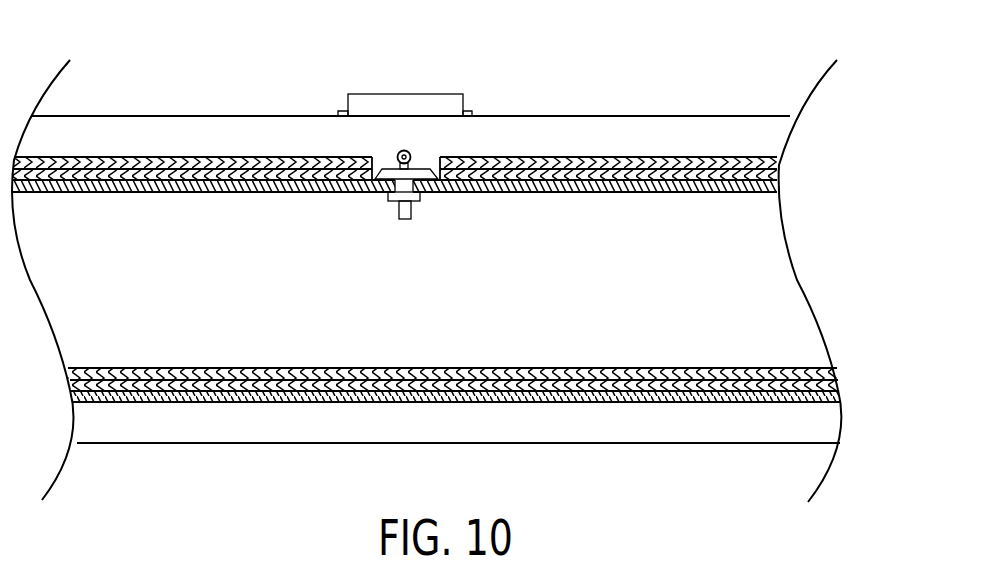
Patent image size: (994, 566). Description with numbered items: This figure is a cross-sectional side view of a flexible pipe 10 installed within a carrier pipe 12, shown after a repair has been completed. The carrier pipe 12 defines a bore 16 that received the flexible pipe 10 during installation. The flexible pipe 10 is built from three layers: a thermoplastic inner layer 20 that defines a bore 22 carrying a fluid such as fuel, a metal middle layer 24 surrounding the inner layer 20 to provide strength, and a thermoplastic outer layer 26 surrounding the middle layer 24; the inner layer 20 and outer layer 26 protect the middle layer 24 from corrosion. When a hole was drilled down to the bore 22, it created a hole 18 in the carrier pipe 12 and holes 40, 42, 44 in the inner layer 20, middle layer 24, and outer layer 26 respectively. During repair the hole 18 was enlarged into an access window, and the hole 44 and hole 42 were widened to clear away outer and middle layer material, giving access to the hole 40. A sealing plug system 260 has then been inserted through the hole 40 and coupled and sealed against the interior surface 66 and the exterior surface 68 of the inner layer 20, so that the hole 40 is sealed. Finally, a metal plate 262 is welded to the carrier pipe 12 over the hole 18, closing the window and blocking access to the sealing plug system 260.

The flexible pipe 10 is at (831, 305).
The carrier pipe 12 is at (164, 116).
The bore 16 is at (197, 434).
The hole 18 is at (329, 93).
The inner layer 20 is at (582, 183).
The bore 22 is at (192, 281).
The middle layer 24 is at (645, 177).
The outer layer 26 is at (698, 162).
The hole 40 is at (385, 192).
The hole 42 is at (457, 186).
The hole 44 is at (372, 160).
The interior surface 66 is at (110, 193).
The exterior surface 68 is at (278, 187).
The sealing plug system 260 is at (430, 147).
The metal plate 262 is at (425, 97).